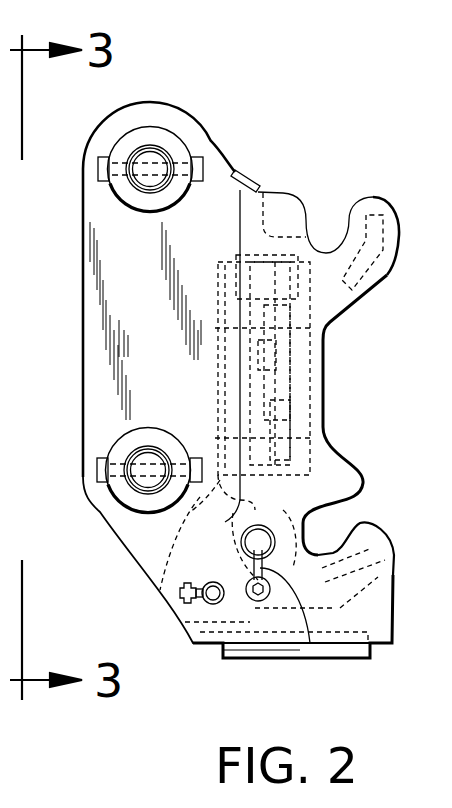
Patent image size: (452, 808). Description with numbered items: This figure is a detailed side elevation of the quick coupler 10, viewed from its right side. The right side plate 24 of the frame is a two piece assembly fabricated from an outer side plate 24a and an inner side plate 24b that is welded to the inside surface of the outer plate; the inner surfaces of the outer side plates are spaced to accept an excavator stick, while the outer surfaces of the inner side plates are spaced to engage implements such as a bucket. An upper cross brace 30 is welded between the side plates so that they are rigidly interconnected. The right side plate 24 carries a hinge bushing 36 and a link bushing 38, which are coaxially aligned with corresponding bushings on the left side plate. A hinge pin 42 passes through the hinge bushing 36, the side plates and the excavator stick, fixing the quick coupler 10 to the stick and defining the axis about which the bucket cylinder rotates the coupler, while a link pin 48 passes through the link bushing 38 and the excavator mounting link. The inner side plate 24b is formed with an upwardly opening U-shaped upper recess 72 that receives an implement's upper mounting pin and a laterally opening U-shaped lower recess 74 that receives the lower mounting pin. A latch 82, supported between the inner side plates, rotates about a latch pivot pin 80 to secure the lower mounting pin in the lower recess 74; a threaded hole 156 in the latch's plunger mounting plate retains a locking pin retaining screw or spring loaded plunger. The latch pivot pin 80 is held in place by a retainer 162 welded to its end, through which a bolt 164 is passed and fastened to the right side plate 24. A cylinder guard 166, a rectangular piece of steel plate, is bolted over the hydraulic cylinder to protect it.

The quick coupler 10 is at (258, 143).
The right side plate 24 is at (83, 336).
The outer side plate 24a is at (97, 378).
The inner side plate 24b is at (323, 427).
The upper cross brace 30 is at (393, 282).
The hinge bushing 36 is at (172, 133).
The link bushing 38 is at (113, 443).
The hinge pin 42 is at (133, 183).
The link pin 48 is at (130, 490).
The upper recess 72 is at (334, 208).
The lower recess 74 is at (360, 505).
The latch pivot pin 80 is at (213, 527).
The latch 82 is at (388, 543).
The threaded hole 156 is at (173, 612).
The retainer 162 is at (310, 645).
The bolt 164 is at (258, 600).
The cylinder guard 166 is at (215, 370).